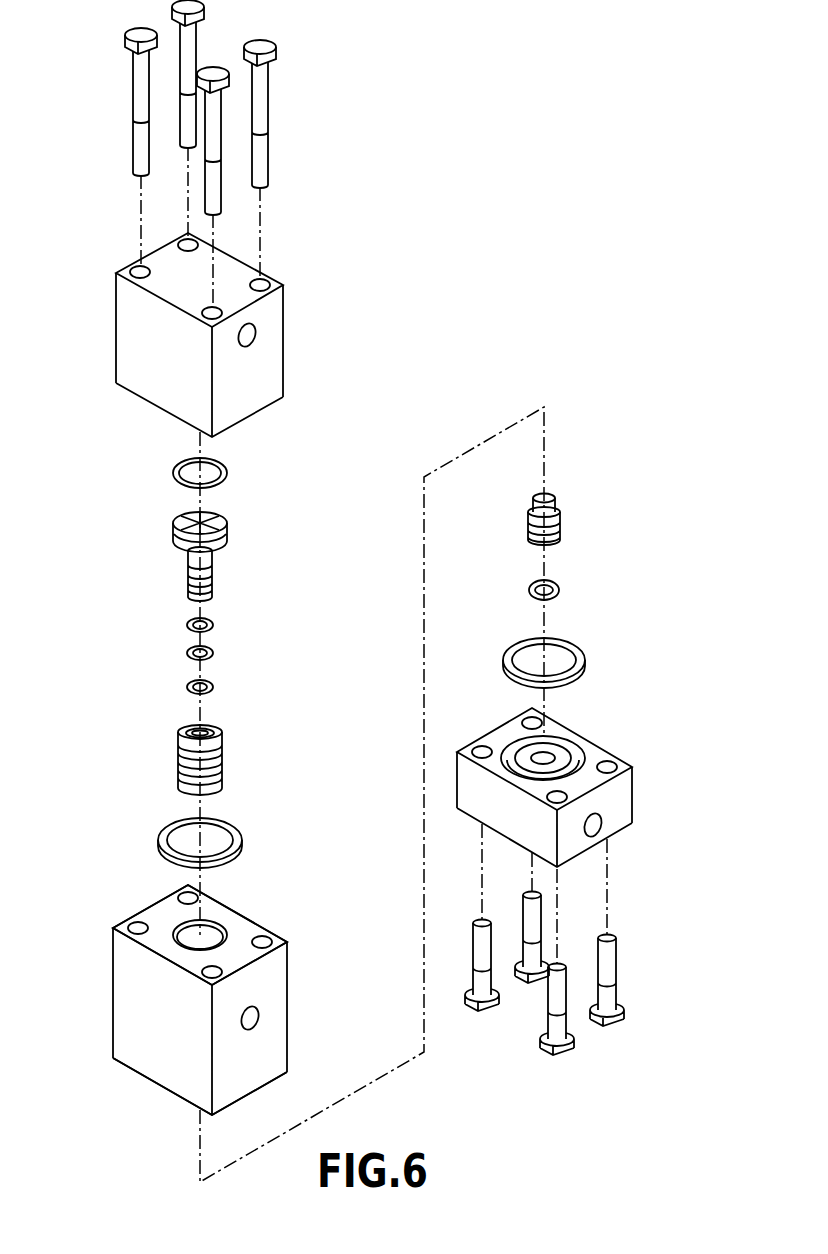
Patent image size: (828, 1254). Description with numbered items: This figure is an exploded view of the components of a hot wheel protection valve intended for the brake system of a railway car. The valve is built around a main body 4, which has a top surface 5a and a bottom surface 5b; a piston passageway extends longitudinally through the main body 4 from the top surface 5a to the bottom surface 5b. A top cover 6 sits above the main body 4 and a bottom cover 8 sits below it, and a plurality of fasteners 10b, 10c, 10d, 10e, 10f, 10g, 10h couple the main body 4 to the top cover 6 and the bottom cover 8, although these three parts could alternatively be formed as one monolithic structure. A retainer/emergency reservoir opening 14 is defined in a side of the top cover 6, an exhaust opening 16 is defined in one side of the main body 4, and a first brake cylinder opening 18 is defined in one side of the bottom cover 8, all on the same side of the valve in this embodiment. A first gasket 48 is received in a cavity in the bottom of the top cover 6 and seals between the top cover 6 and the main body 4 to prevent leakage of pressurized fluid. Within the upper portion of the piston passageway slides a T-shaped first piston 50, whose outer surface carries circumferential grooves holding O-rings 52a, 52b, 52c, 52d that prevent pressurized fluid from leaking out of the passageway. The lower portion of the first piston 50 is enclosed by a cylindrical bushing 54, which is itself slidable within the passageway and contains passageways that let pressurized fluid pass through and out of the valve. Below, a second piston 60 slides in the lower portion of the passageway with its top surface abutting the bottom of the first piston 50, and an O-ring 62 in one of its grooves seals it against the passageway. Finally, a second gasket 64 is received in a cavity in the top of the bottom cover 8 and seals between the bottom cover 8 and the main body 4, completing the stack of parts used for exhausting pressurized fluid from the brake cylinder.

The main body 4 is at (120, 983).
The top surface 5a is at (243, 925).
The bottom surface 5b is at (147, 1080).
The top cover 6 is at (277, 347).
The bottom cover 8 is at (630, 782).
The fastener 10b is at (268, 60).
The fastener 10c is at (222, 88).
The fastener 10d is at (133, 33).
The fastener 10e is at (528, 985).
The fastener 10f is at (620, 1020).
The fastener 10g is at (572, 1050).
The fastener 10h is at (475, 1008).
The retainer/emergency reservoir opening 14 is at (253, 327).
The exhaust opening 16 is at (260, 1018).
The first brake cylinder opening 18 is at (603, 827).
The first gasket 48 is at (242, 845).
The first piston 50 is at (222, 531).
The O-ring 52a is at (225, 468).
The O-ring 52b is at (212, 623).
The O-ring 52c is at (212, 651).
The O-ring 52d is at (212, 685).
The bushing 54 is at (222, 768).
The second piston 60 is at (560, 523).
The O-ring 62 is at (558, 590).
The second gasket 64 is at (585, 663).